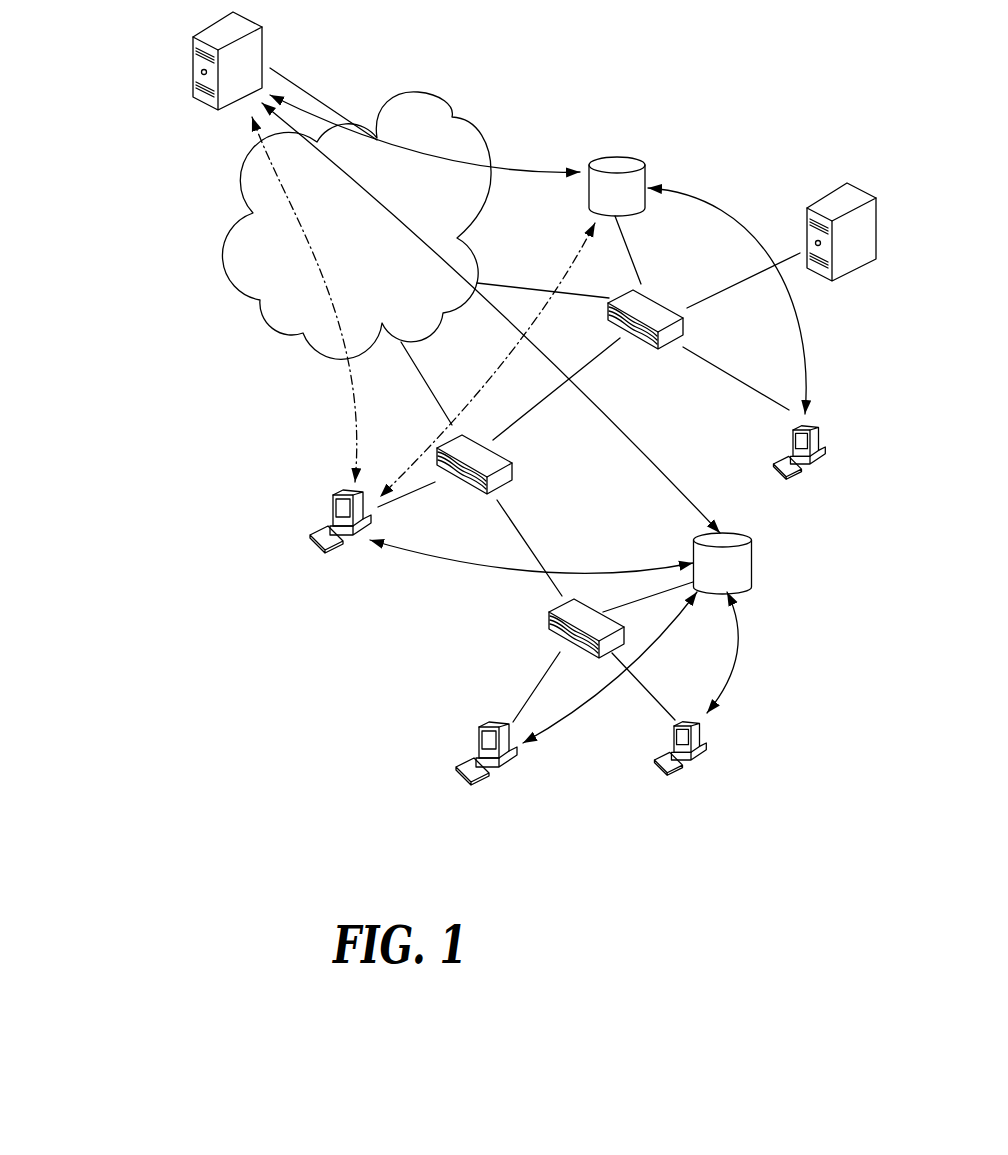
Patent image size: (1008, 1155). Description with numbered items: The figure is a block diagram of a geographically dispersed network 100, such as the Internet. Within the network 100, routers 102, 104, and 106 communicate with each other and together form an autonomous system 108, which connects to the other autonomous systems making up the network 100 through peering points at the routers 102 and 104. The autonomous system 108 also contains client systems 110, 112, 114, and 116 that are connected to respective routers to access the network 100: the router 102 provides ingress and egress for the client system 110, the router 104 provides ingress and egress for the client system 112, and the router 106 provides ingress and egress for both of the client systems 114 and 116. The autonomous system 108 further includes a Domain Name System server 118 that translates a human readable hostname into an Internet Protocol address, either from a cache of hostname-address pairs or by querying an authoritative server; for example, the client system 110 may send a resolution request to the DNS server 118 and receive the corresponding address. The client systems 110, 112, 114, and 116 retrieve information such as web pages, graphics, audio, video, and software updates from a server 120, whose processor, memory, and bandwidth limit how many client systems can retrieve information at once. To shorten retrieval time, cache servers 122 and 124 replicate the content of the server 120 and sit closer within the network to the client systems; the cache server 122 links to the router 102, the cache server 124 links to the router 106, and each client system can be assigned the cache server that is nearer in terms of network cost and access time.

The network 100 is at (203, 272).
The router 102 is at (653, 306).
The router 104 is at (485, 492).
The router 106 is at (550, 617).
The autonomous system 108 is at (692, 127).
The client system 110 is at (790, 425).
The client system 112 is at (337, 496).
The client system 114 is at (480, 726).
The client system 116 is at (677, 724).
The Domain Name System (DNS) server 118 is at (825, 212).
The server 120 is at (212, 41).
The cache server 122 is at (592, 207).
The cache server 124 is at (752, 562).